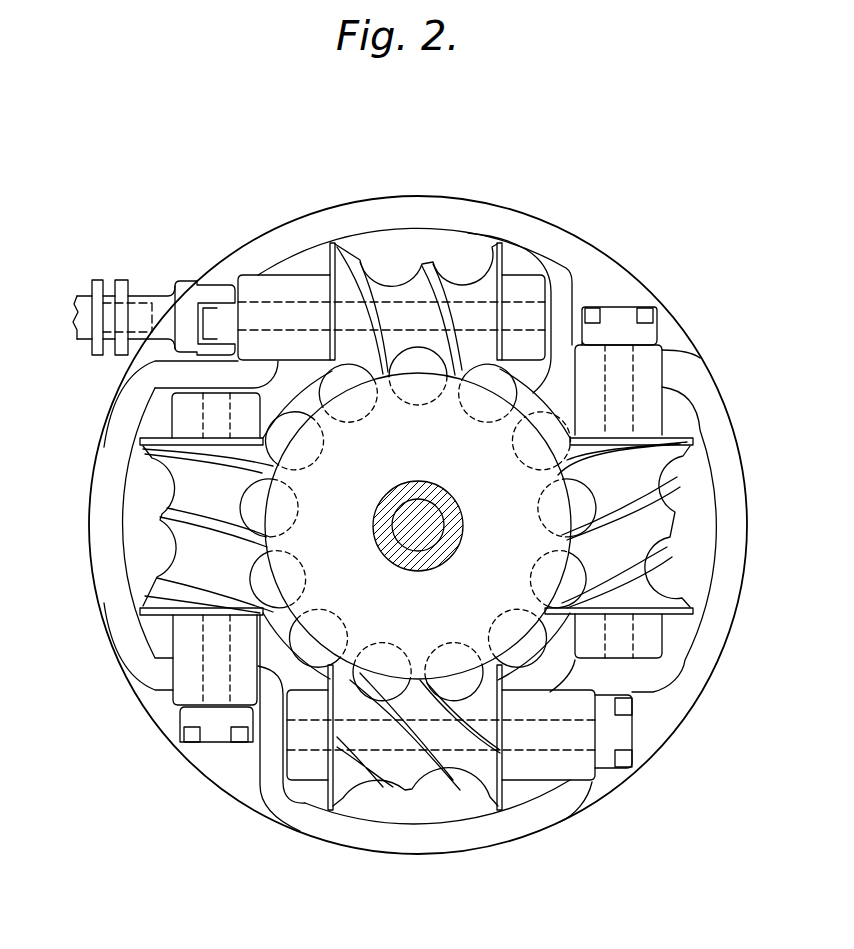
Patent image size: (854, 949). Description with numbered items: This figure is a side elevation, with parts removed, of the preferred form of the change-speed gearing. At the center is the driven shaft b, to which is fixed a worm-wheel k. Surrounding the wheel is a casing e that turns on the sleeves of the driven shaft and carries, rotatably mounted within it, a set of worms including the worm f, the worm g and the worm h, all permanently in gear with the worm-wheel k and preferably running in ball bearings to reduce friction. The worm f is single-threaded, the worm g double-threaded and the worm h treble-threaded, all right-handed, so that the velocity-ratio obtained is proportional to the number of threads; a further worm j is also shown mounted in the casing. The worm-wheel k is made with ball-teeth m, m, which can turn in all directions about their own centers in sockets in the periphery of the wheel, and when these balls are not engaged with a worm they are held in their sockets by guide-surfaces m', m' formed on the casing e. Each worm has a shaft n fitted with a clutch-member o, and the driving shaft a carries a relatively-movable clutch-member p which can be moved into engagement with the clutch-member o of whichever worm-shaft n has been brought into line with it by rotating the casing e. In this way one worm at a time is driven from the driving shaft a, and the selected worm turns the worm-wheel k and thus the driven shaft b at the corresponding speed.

The driving shaft a is at (76, 289).
The driven shaft b is at (433, 516).
The casing e is at (106, 610).
The worm f is at (378, 292).
The worm g is at (656, 497).
The worm h is at (410, 781).
The left cylinder j is at (176, 524).
The worm-wheel k is at (418, 526).
The ball-teeth m is at (418, 524).
The guide-surfaces m' is at (408, 514).
The clutch-members o is at (418, 537).
The clutch-member p is at (183, 283).
The worm-shafts n is at (166, 650).